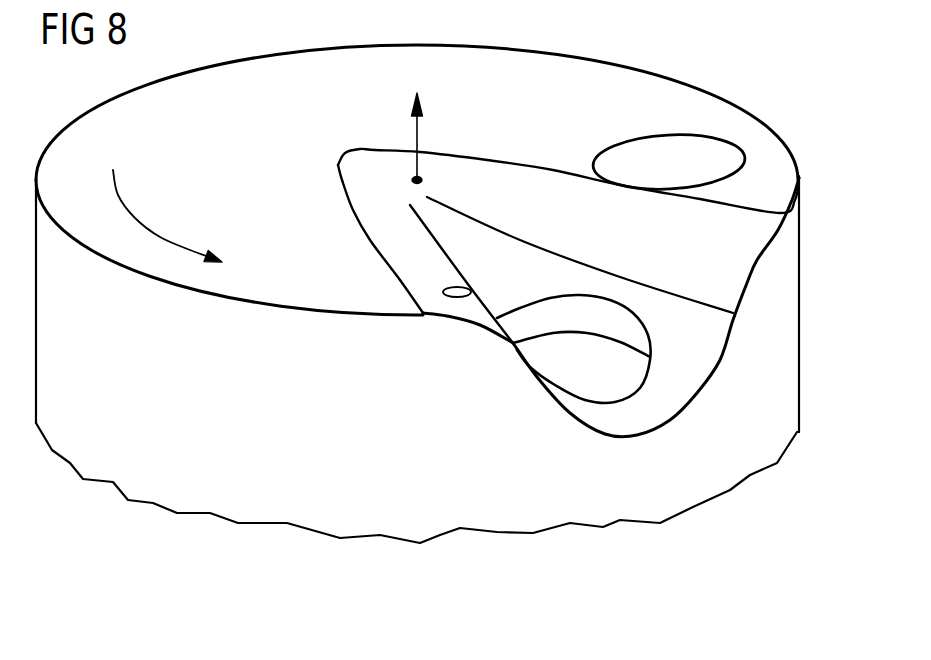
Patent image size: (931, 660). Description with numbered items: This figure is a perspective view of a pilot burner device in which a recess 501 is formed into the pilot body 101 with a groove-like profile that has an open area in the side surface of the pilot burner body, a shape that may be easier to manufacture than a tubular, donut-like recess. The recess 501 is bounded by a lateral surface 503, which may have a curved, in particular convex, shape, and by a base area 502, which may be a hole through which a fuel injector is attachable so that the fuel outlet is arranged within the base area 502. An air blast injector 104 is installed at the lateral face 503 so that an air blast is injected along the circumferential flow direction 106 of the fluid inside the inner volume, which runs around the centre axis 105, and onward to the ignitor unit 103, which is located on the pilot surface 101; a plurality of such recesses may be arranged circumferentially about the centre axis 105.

The pilot body 101 is at (408, 83).
The ignitor unit 103 is at (676, 147).
The air blast injector 104 is at (455, 290).
The centre axis 105 is at (421, 180).
The flow direction 106 is at (143, 223).
The recess 501 is at (725, 239).
The base area 502 is at (647, 420).
The lateral surface 503 is at (618, 230).